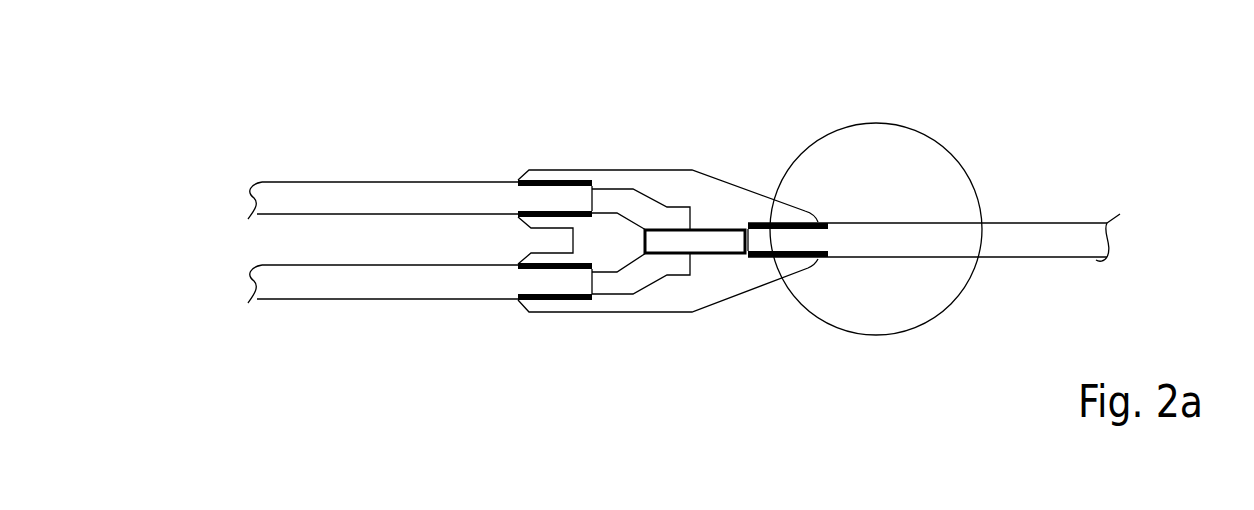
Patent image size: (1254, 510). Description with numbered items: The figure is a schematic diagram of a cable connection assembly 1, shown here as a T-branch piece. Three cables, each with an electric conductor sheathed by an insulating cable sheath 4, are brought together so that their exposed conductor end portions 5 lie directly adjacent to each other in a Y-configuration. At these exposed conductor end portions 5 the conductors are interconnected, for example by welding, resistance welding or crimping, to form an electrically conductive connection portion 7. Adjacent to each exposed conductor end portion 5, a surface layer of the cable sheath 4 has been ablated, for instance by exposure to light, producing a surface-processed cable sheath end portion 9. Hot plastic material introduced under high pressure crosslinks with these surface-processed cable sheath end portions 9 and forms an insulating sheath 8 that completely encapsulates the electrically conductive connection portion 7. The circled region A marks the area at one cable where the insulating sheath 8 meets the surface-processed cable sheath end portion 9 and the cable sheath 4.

The cable connection assembly 1 is at (250, 95).
The insulating cable sheath 4 is at (322, 190).
The exposed conductor end portion 5 is at (624, 200).
The electrically conductive connection portion 7 is at (655, 257).
The insulating sheath 8 is at (710, 182).
The surface-processed cable sheath end portion 9 is at (553, 180).
The detail region A is at (923, 327).